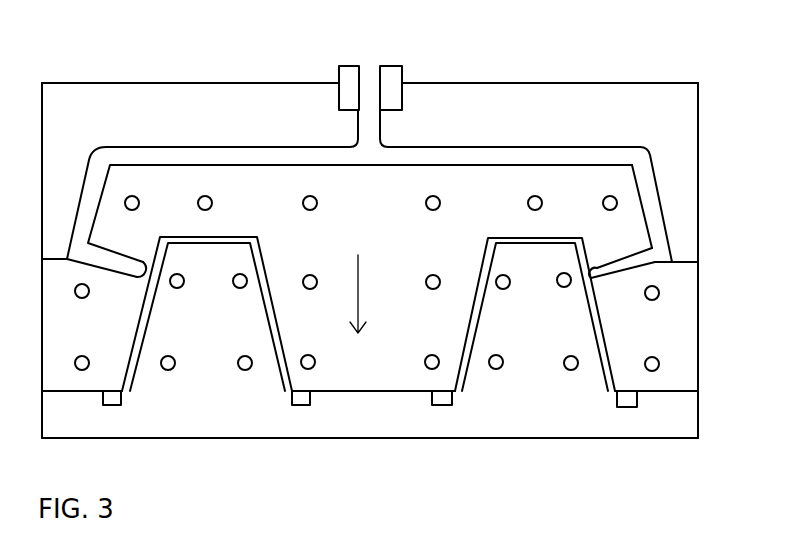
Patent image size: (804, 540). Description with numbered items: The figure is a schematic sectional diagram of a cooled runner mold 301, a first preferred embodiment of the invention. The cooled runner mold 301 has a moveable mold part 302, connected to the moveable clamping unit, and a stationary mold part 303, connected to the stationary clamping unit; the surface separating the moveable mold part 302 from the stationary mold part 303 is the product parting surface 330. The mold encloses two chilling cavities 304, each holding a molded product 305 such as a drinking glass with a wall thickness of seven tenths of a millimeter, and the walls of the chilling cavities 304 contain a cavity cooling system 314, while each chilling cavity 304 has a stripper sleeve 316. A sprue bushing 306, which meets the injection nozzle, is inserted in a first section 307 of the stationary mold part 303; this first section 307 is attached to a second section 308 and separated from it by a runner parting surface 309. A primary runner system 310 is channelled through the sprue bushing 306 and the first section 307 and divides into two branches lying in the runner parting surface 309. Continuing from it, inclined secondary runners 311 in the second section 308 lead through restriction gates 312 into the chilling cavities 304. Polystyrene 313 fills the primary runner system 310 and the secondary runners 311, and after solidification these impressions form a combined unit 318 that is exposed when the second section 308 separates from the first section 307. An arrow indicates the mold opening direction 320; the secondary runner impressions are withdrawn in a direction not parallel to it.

The cooled runner mold 301 is at (697, 372).
The moveable mold part 302 is at (698, 432).
The stationary mold part 303 is at (698, 243).
The chilling cavity 304 is at (482, 273).
The molded product 305 is at (470, 325).
The sprue bushing 306 is at (388, 82).
The first section 307 is at (698, 160).
The second section 308 is at (698, 320).
The runner parting surface 309 is at (688, 262).
The primary runner system 310 is at (417, 159).
The inclined secondary runners 311 is at (617, 252).
The restriction gate 312 is at (592, 273).
The polystyrene 313 is at (368, 87).
The cavity cooling system 314 is at (566, 370).
The stripper sleeve 316 is at (627, 403).
The combined unit 318 is at (651, 248).
The mold opening direction 320 is at (337, 289).
The product parting surface 330 is at (388, 391).